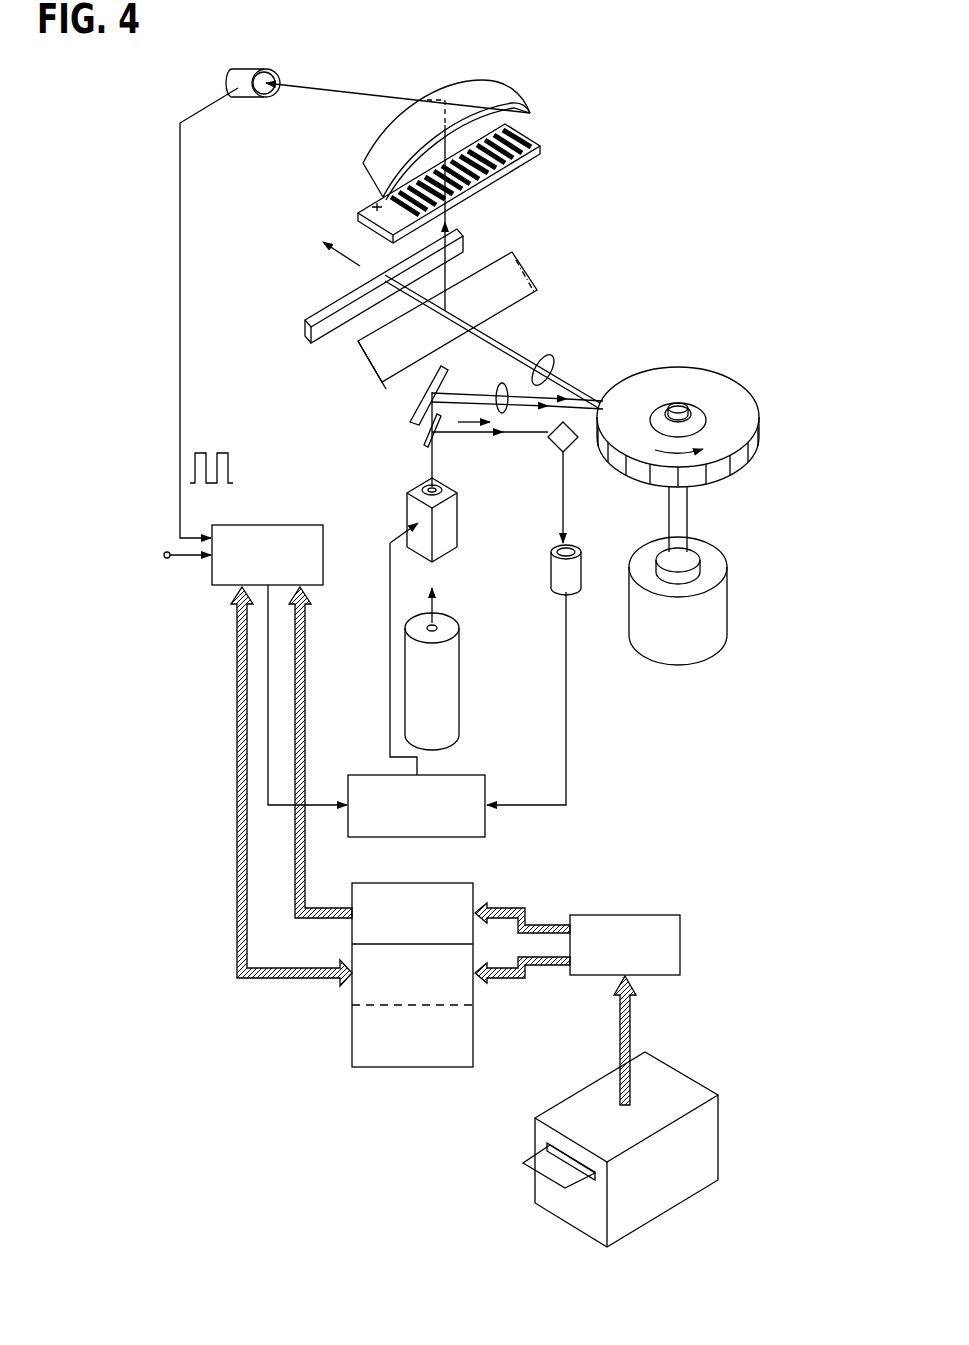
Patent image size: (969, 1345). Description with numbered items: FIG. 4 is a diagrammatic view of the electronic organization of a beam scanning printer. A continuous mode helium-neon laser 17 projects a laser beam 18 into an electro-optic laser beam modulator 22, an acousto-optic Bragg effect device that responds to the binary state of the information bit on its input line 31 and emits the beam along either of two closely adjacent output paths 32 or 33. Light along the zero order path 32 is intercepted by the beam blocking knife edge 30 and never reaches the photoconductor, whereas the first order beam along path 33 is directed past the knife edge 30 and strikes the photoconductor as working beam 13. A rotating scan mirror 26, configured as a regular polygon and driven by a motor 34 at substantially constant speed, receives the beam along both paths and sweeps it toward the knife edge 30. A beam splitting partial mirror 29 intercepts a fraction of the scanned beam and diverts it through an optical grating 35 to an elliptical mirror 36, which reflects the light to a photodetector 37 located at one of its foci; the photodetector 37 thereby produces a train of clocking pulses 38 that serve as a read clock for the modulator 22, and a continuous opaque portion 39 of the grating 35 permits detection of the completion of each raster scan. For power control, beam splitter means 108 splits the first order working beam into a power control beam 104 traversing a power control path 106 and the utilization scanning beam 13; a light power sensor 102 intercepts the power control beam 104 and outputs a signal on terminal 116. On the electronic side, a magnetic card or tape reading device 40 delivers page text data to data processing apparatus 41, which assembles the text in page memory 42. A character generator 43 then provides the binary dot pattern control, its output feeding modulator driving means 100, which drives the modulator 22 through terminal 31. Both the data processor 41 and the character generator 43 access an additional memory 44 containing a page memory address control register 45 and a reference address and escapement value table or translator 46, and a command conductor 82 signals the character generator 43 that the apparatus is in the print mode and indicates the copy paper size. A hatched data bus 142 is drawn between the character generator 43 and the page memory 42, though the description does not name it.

The working beam 13 is at (345, 260).
The helium-neon laser 17 is at (453, 677).
The laser beam 18 is at (437, 602).
The electro-optic laser beam modulator 22 is at (450, 520).
The rotating scan mirror 26 is at (703, 383).
The beam splitting partial mirror 29 is at (518, 264).
The beam blocking knife edge 30 is at (455, 244).
The input line 31 is at (390, 545).
The zero order beam path 32 is at (425, 448).
The first order beam path 33 is at (436, 462).
The motor 34 is at (722, 607).
The optical grating 35 is at (510, 166).
The elliptical mirror 36 is at (517, 102).
The photodetector 37 is at (248, 92).
The clocking pulses 38 is at (236, 472).
The continuous opaque portion 39 is at (372, 208).
The magnetic card or tape reading device 40 is at (682, 1080).
The data processing apparatus 41 is at (625, 915).
The page memory 42 is at (408, 883).
The character generator 43 is at (277, 523).
The additional memory 44 is at (345, 1007).
The page memory address control register 45 is at (357, 955).
The translator 46 is at (467, 1050).
The command conductor 82 is at (187, 546).
The modulator driving means 100 is at (460, 773).
The light power sensor 102 is at (552, 548).
The power control beam 104 is at (485, 435).
The power control path 106 is at (472, 420).
The beam splitter means 108 is at (421, 432).
The terminal 116 is at (568, 697).
The data bus 142 is at (267, 712).